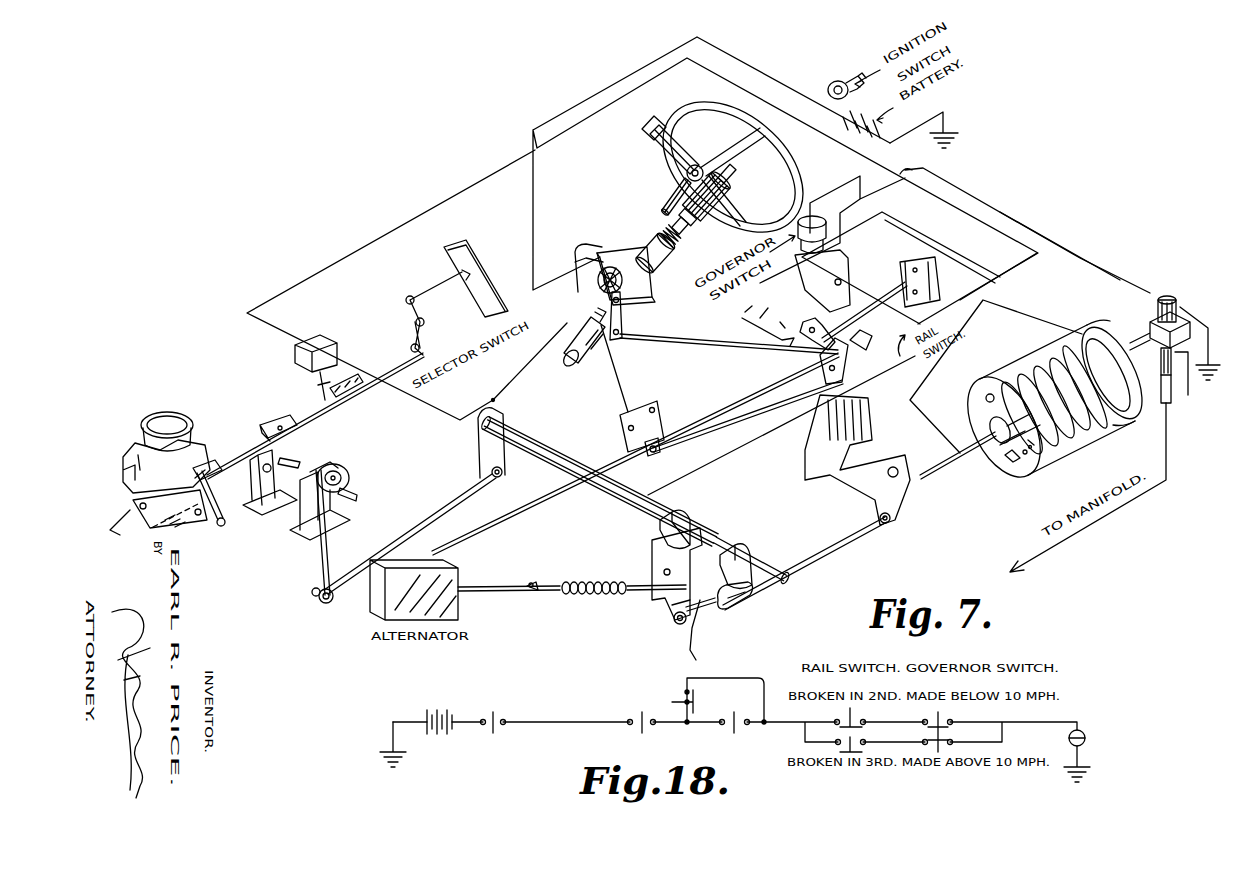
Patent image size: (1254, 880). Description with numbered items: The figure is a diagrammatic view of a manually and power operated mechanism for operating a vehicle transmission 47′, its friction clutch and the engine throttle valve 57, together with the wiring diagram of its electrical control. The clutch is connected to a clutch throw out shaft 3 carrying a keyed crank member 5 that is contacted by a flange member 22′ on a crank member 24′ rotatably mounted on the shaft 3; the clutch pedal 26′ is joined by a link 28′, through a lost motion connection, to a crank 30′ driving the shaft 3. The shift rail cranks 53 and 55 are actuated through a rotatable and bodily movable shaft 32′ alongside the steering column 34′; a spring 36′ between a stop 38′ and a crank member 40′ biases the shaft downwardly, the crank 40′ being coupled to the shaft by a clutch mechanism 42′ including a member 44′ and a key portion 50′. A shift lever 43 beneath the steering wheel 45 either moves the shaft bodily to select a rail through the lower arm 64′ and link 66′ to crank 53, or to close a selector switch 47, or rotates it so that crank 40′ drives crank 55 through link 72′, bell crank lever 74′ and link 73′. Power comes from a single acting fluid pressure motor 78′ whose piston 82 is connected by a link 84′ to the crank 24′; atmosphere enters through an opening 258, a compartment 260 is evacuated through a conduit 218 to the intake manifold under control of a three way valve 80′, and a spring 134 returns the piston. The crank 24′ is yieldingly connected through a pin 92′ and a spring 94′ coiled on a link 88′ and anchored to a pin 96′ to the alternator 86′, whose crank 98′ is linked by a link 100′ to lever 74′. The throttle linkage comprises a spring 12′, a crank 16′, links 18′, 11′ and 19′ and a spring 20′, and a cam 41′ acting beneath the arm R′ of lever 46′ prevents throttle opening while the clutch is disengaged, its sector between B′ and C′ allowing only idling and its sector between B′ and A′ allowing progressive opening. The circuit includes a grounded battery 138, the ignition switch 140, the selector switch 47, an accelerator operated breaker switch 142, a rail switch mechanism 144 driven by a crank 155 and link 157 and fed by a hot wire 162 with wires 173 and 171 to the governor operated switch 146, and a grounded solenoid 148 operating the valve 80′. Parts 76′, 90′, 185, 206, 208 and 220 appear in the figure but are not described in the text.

In FIG. 7, the clutch throw out shaft 3 is at (655, 492).
In FIG. 7, the crank member 5 is at (660, 526).
In FIG. 7, the link 11′ is at (205, 475).
In FIG. 7, the spring 12′ is at (125, 528).
In FIG. 7, the crank 16′ is at (222, 530).
In FIG. 7, the link 18′ is at (305, 425).
In FIG. 7, the link 19′ is at (392, 360).
In FIG. 7, the spring 20′ is at (365, 396).
In FIG. 7, the flange member 22′ is at (650, 550).
In FIG. 7, the crank member 24′ is at (712, 545).
In FIG. 7, the clutch pedal 26′ is at (868, 425).
In FIG. 7, the link 28′ is at (825, 562).
In FIG. 7, the crank 30′ is at (712, 612).
In FIG. 7, the shaft 32′ is at (668, 214).
In FIG. 7, the steering column 34′ is at (690, 232).
In FIG. 7, the spring 36′ is at (645, 240).
In FIG. 7, the stop 38′ is at (652, 272).
In FIG. 7, the crank member 40′ is at (578, 252).
In FIG. 7, the cam 41′ is at (348, 496).
In FIG. 7, the clutch mechanism 42′ is at (322, 575).
In FIG. 7, the shift lever 43 is at (655, 128).
In FIG. 7, the member 44′ is at (320, 532).
In FIG. 7, the steering wheel 45 is at (790, 180).
In FIG. 7, the bell crank lever 46′ is at (236, 480).
In FIG. 7, the selector switch 47 is at (558, 314).
In FIG. 18, the selector switch 47 is at (640, 733).
In FIG. 7, the transmission 47′ is at (738, 318).
In FIG. 7, the key portion 50′ is at (278, 418).
In FIG. 7, the shift rail selecting crank 53 is at (850, 366).
In FIG. 7, the shift rail operating crank 55 is at (805, 345).
In FIG. 7, the throttle valve 57 is at (140, 505).
In FIG. 7, the lower arm 64′ is at (618, 342).
In FIG. 7, the link 66′ is at (712, 356).
In FIG. 7, the link 72′ is at (612, 392).
In FIG. 7, the link 73′ is at (712, 420).
In FIG. 7, the bell crank lever 74′ is at (620, 422).
In FIG. 7, the solenoid 76′ is at (1020, 478).
In FIG. 18, the solenoid 76′ is at (678, 702).
In FIG. 7, the fluid pressure motor 78′ is at (1000, 360).
In FIG. 7, the three way valve 80′ is at (1188, 395).
In FIG. 7, the piston 82 is at (1055, 345).
In FIG. 7, the link 84′ is at (930, 485).
In FIG. 7, the alternator 86′ is at (370, 608).
In FIG. 7, the link 88′ is at (482, 592).
In FIG. 7, the link 90′ is at (692, 640).
In FIG. 7, the pin 92′ is at (674, 622).
In FIG. 7, the spring 94′ is at (610, 596).
In FIG. 7, the pin 96′ is at (530, 582).
In FIG. 7, the crank 98′ is at (432, 512).
In FIG. 7, the link 100′ is at (535, 500).
In FIG. 7, the spring 134 is at (1130, 430).
In FIG. 7, the battery 138 is at (880, 140).
In FIG. 18, the battery 138 is at (443, 712).
In FIG. 7, the ignition switch 140 is at (838, 80).
In FIG. 18, the ignition switch 140 is at (493, 735).
In FIG. 7, the accelerator operated breaker switch 142 is at (293, 345).
In FIG. 18, the accelerator operated breaker switch 142 is at (732, 733).
In FIG. 7, the rail switch mechanism 144 is at (838, 260).
In FIG. 18, the rail switch mechanism 144 is at (845, 732).
In FIG. 7, the governor operated switch mechanism 146 is at (830, 242).
In FIG. 18, the governor operated switch mechanism 146 is at (955, 734).
In FIG. 7, the solenoid 148 is at (1168, 297).
In FIG. 18, the solenoid 148 is at (1086, 736).
In FIG. 7, the crank 155 is at (900, 287).
In FIG. 7, the link 157 is at (855, 330).
In FIG. 7, the hot wire 162 is at (990, 284).
In FIG. 7, the wire 171 is at (940, 246).
In FIG. 7, the wire 173 is at (903, 226).
In FIG. 7, the platform 185 is at (1060, 228).
In FIG. 7, the lever linkage 206 is at (422, 338).
In FIG. 7, the plate 208 is at (466, 242).
In FIG. 7, the conduit 218 is at (1172, 420).
In FIG. 7, the valve body 220 is at (1152, 318).
In FIG. 7, the opening 258 is at (980, 399).
In FIG. 7, the compartment 260 is at (1095, 440).
In FIG. 7, the arm R′ is at (288, 475).
In FIG. 7, the cam point A′ is at (325, 468).
In FIG. 7, the cam portion B′ is at (340, 465).
In FIG. 7, the cam point C′ is at (350, 480).